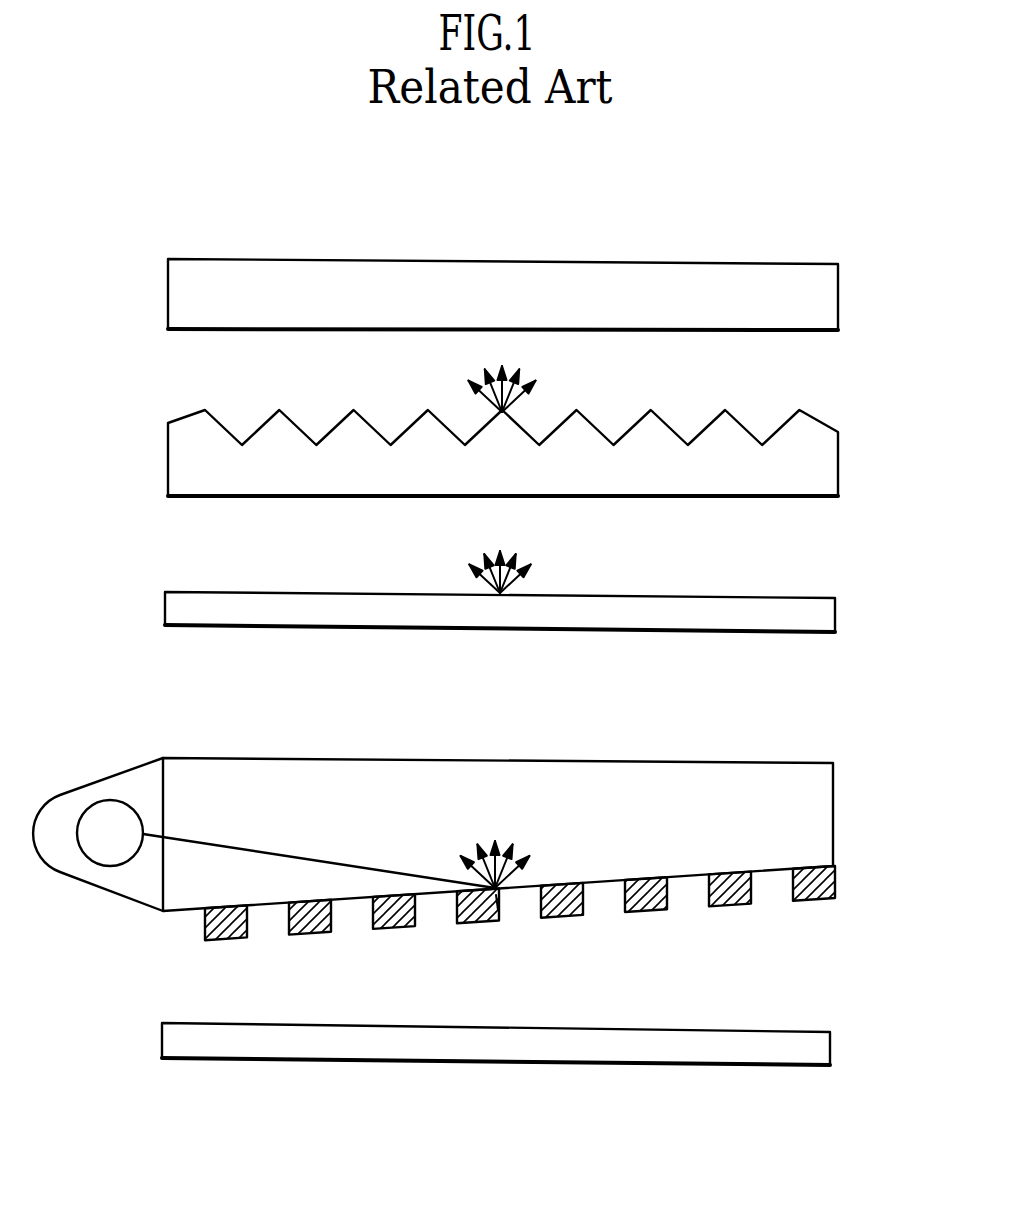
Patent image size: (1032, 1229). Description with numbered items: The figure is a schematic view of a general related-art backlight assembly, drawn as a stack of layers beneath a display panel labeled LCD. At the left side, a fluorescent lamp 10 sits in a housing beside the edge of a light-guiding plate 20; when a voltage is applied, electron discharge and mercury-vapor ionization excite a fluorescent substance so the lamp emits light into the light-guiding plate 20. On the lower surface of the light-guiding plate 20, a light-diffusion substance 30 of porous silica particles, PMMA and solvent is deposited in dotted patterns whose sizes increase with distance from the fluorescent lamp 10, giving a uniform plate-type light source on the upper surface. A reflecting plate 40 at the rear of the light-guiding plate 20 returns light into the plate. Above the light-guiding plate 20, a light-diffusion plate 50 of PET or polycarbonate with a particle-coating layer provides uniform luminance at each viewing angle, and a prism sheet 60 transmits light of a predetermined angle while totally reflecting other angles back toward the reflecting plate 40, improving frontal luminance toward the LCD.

The liquid crystal display panel LCD is at (838, 300).
The prism sheet 60 is at (838, 483).
The light-diffusion plate 50 is at (835, 615).
The light-guiding plate 20 is at (833, 808).
The fluorescent lamp 10 is at (107, 807).
The light-diffusion substance 30 is at (833, 878).
The reflecting plate 40 is at (830, 1048).